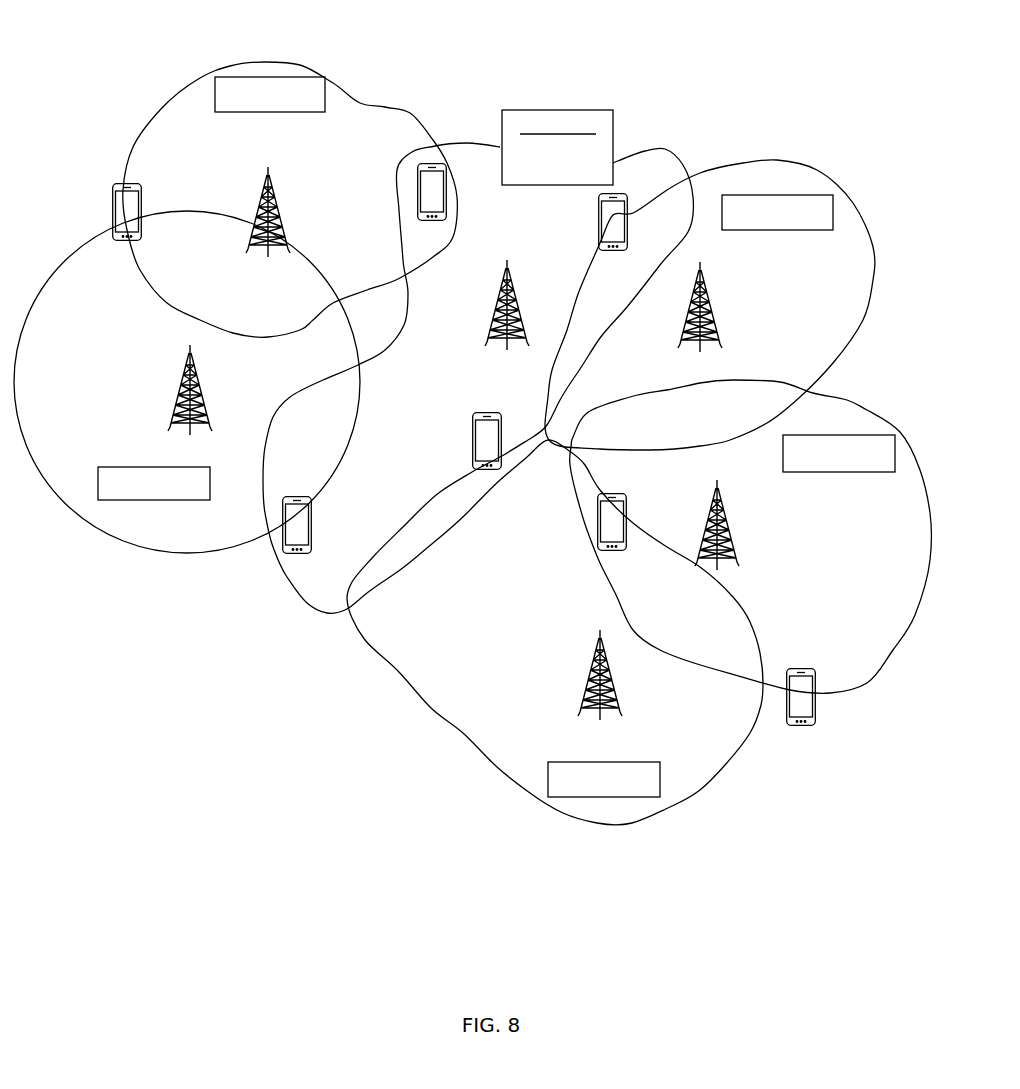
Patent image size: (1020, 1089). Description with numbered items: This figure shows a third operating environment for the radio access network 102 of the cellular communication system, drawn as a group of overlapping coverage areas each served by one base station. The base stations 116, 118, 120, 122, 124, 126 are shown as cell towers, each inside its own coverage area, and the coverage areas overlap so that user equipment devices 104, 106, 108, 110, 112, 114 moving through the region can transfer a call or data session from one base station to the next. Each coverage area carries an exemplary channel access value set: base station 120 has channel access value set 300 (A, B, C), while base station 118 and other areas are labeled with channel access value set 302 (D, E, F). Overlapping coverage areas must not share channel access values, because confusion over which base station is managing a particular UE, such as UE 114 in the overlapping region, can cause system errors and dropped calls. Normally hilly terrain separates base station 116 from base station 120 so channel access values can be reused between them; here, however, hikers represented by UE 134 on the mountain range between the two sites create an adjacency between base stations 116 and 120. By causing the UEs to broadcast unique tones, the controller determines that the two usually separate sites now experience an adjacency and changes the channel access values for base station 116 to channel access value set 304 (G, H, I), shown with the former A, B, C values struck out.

The radio access network 102 is at (498, 78).
The user equipment device 104 is at (630, 208).
The user equipment device 106 is at (505, 423).
The user equipment device 108 is at (625, 503).
The user equipment device 110 is at (315, 540).
The user equipment device 112 is at (817, 680).
The user equipment device 114 is at (143, 197).
The base station 116 is at (497, 298).
The base station 118 is at (183, 380).
The base station 120 is at (278, 212).
The base station 122 is at (712, 308).
The base station 124 is at (728, 523).
The base station 126 is at (593, 663).
The user equipment device 134 is at (417, 176).
The channel access value set 300 is at (282, 78).
The channel access value set 302 is at (823, 194).
The channel access value set 304 is at (586, 110).